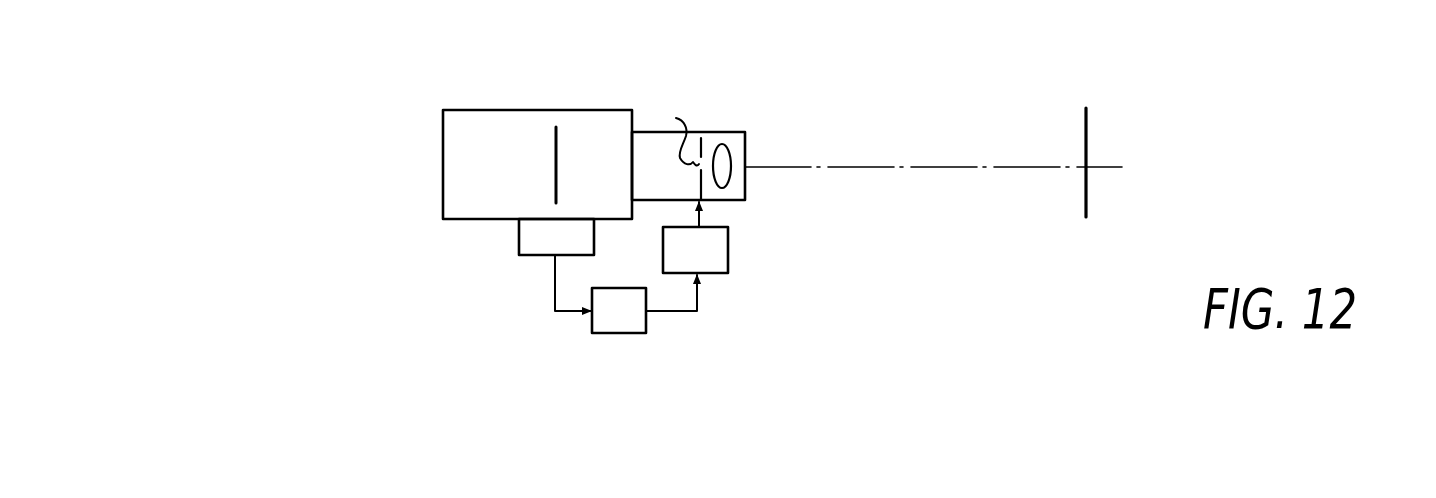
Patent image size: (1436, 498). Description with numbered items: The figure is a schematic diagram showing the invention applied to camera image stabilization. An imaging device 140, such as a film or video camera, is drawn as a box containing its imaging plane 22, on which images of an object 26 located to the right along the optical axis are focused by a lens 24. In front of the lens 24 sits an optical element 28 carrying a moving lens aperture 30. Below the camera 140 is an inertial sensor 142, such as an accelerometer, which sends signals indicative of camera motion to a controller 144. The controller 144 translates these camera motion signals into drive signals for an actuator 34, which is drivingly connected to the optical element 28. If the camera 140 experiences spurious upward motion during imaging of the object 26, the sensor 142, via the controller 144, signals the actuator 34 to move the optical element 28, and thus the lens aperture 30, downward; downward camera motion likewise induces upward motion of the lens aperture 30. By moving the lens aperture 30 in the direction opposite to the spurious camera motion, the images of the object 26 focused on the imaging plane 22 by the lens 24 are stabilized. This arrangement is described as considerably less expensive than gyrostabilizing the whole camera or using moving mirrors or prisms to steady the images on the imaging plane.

The imaging device 140 is at (468, 122).
The imaging plane 22 is at (556, 166).
The inertial sensor 142 is at (520, 239).
The controller 144 is at (627, 333).
The actuator 34 is at (728, 247).
The optical element 28 is at (703, 150).
The lens 24 is at (724, 165).
The lens aperture 30 is at (677, 129).
The object 26 is at (1088, 121).